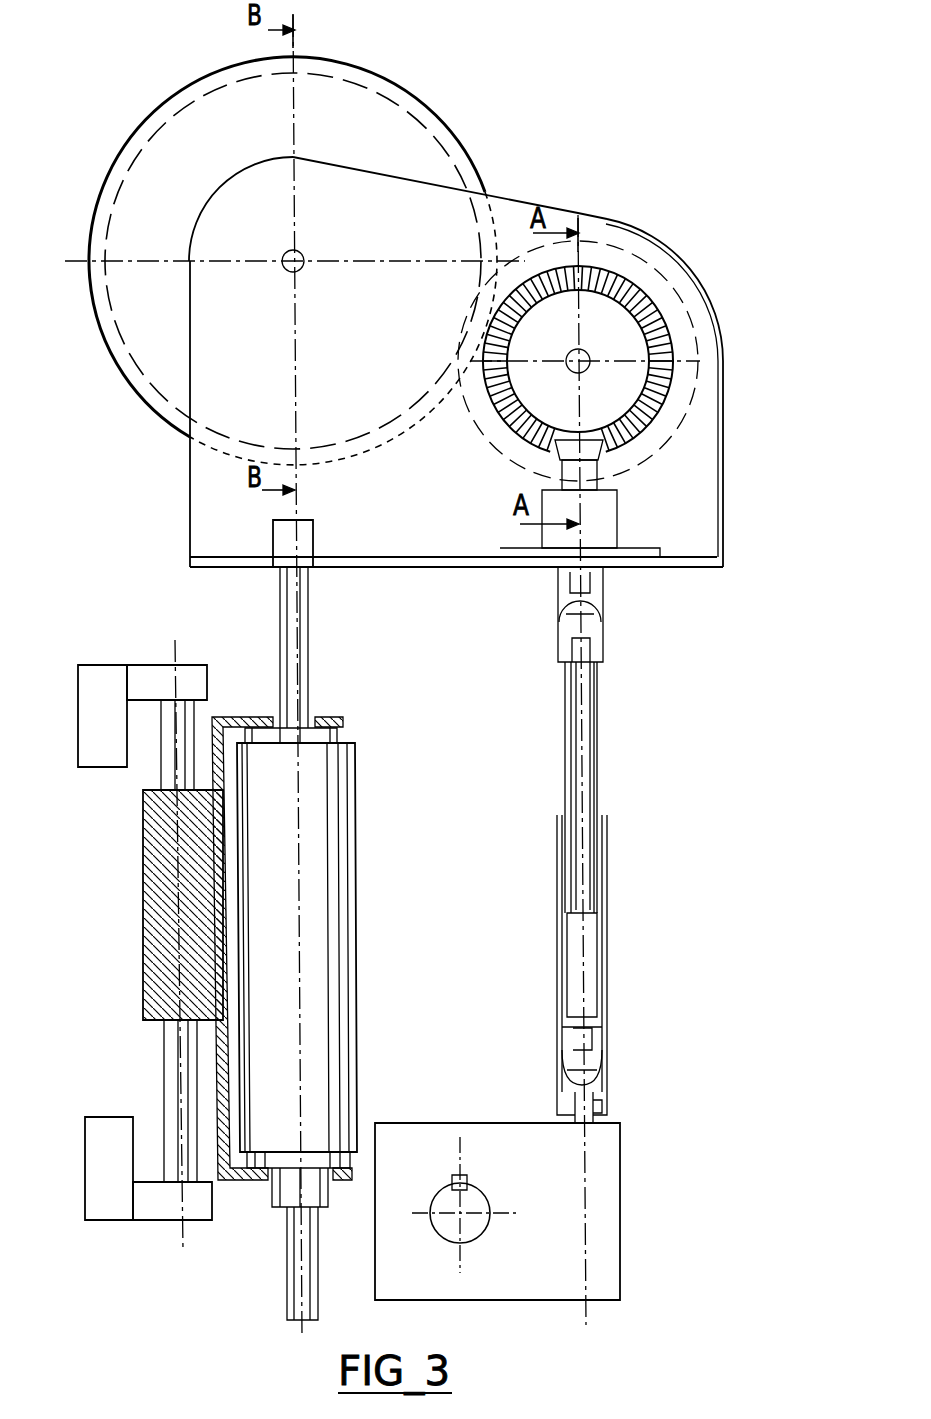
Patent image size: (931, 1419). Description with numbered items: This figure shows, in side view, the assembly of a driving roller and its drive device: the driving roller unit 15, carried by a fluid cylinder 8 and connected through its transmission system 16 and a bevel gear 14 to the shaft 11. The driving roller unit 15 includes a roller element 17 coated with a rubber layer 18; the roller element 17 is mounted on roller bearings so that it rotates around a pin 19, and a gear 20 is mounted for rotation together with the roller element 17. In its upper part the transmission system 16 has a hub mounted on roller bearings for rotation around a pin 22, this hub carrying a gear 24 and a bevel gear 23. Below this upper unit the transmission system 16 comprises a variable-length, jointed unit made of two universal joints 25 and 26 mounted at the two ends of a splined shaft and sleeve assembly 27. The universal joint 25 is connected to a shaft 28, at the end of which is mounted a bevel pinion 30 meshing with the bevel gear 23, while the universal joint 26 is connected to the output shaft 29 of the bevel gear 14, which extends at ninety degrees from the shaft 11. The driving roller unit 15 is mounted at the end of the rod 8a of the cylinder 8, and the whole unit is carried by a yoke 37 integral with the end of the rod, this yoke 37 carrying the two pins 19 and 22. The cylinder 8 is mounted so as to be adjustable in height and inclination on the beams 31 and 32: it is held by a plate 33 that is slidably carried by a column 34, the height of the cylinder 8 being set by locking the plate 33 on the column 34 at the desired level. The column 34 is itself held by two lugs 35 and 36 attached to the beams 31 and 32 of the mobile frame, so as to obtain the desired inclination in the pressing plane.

The pneumatic cylinder 8 is at (335, 908).
The rod 8a is at (308, 640).
The shaft 11 is at (472, 1200).
The bevel gear 14 is at (607, 1222).
The driving roller unit 15 is at (148, 462).
The transmission system 16 is at (641, 868).
The roller element 17 is at (178, 78).
The rubber layer 18 is at (386, 80).
The pin 19 is at (305, 257).
The gear 20 is at (462, 146).
The pin 22 is at (582, 360).
The bevel gear 23 is at (648, 306).
The gear 24 is at (628, 265).
The universal joint 25 is at (600, 645).
The universal joint 26 is at (602, 1080).
The splined shaft and sleeve assembly 27 is at (598, 745).
The shaft 28 is at (586, 584).
The output shaft 29 is at (598, 1101).
The bevel pinion 30 is at (592, 472).
The beam 31 is at (98, 1150).
The beam 32 is at (104, 748).
The plate 33 is at (157, 910).
The column 34 is at (168, 1070).
The lug 35 is at (163, 1200).
The lug 36 is at (185, 680).
The yoke 37 is at (232, 528).